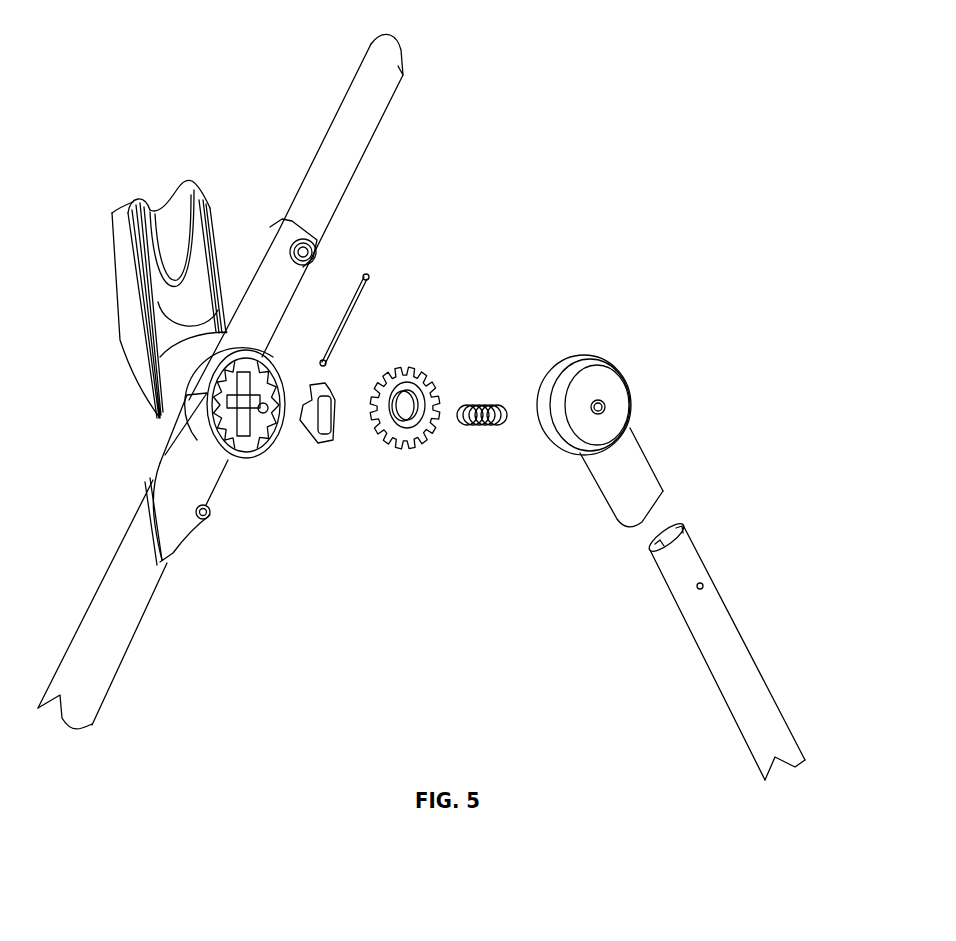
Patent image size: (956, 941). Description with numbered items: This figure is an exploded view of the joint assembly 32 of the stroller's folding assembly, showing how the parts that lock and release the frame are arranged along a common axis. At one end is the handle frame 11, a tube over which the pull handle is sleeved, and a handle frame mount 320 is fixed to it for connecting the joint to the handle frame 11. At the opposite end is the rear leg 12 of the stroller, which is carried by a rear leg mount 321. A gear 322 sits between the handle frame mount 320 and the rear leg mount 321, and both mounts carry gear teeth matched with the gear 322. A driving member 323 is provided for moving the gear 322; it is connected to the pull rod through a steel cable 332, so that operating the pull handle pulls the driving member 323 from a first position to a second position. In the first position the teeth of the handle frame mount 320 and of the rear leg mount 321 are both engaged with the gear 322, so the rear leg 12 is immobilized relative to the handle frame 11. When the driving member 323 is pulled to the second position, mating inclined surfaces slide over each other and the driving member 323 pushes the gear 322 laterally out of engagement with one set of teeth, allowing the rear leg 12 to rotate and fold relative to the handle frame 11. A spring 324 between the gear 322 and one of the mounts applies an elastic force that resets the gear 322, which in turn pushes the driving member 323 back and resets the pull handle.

The handle frame 11 is at (368, 127).
The rear leg 12 is at (720, 633).
The joint assembly 32 is at (465, 333).
The handle frame mount 320 is at (271, 287).
The rear leg mount 321 is at (620, 382).
The gear 322 is at (412, 448).
The driving member 323 is at (320, 443).
The spring 324 is at (487, 425).
The steel cable 332 is at (372, 300).